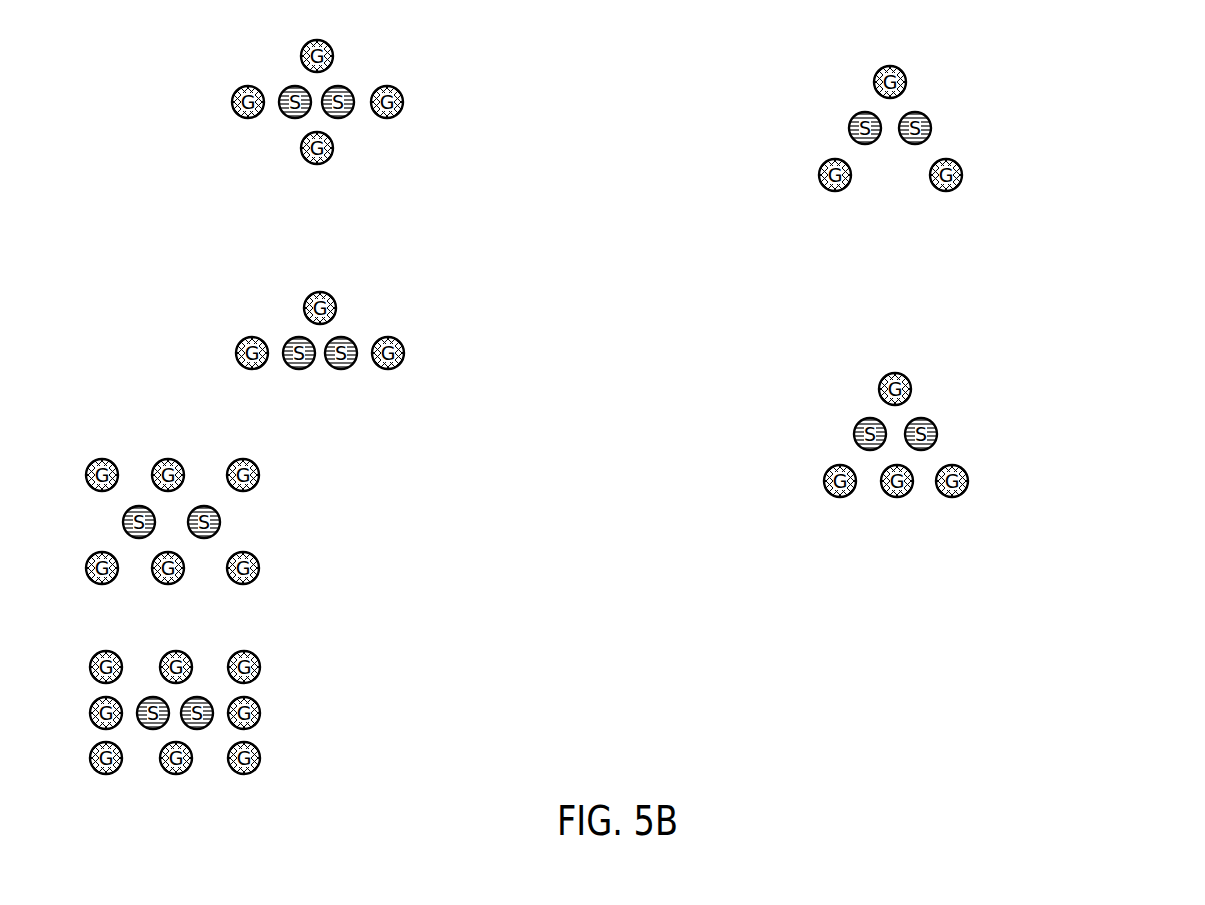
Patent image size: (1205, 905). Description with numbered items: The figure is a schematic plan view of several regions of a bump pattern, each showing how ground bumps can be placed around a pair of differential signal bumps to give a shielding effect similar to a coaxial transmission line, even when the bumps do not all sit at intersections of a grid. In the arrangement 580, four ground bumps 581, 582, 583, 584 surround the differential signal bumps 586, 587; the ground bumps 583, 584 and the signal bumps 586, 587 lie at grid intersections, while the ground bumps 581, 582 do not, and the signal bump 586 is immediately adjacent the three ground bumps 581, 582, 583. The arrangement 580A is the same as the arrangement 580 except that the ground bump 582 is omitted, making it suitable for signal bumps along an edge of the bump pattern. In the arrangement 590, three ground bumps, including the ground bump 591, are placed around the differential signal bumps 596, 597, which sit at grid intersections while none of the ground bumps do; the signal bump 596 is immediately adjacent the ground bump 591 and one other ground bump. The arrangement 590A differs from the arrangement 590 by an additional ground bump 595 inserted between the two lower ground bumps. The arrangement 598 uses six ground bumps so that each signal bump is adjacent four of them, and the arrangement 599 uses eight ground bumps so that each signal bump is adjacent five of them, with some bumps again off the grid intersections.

The arrangement 580 is at (368, 127).
The ground bump 581 is at (333, 55).
The ground bump 582 is at (320, 164).
The ground bump 583 is at (233, 100).
The ground bump 584 is at (402, 101).
The differential signal bump 586 is at (291, 118).
The differential signal bump 587 is at (343, 118).
The arrangement 580A is at (396, 330).
The arrangement 590 is at (962, 154).
The ground bump 591 is at (906, 80).
The lower center ground electrode 595 is at (898, 497).
The differential signal bump 596 is at (849, 127).
The differential signal bump 597 is at (931, 127).
The arrangement 590A is at (986, 463).
The arrangement 598 is at (248, 521).
The arrangement 599 is at (250, 712).